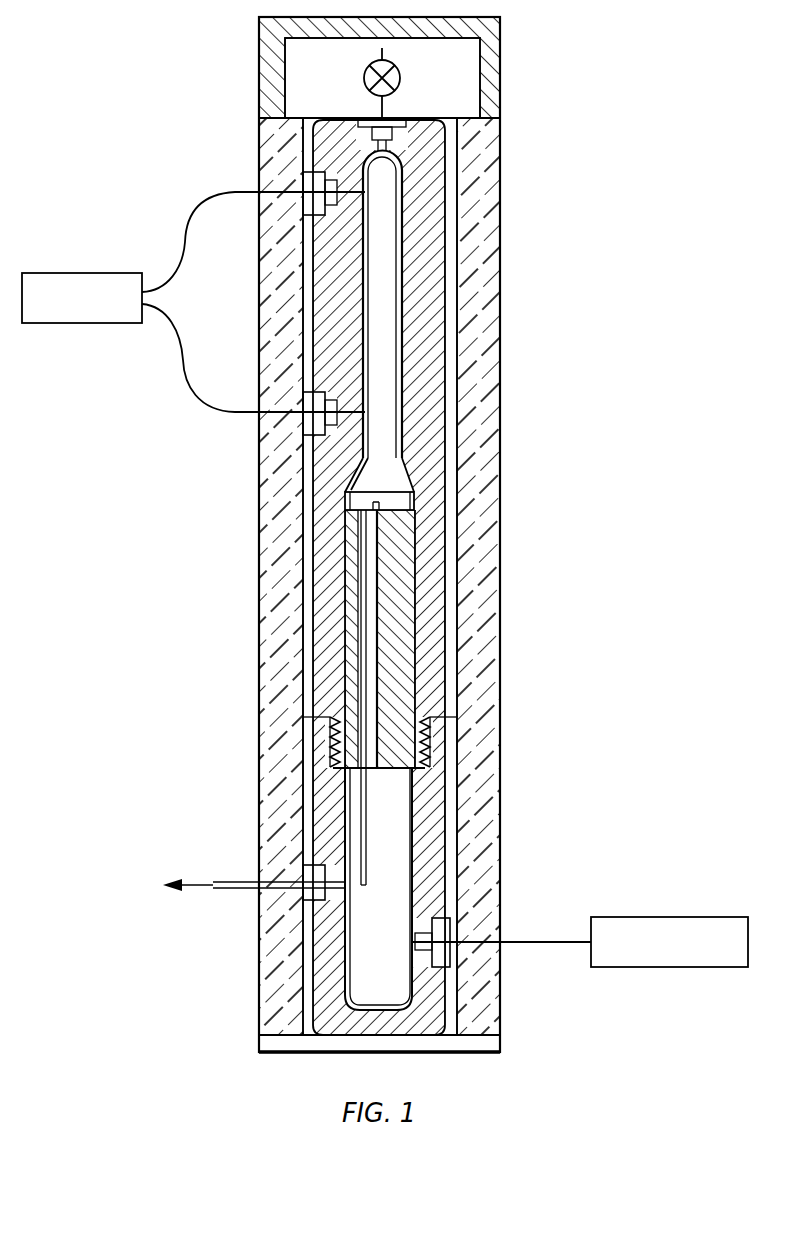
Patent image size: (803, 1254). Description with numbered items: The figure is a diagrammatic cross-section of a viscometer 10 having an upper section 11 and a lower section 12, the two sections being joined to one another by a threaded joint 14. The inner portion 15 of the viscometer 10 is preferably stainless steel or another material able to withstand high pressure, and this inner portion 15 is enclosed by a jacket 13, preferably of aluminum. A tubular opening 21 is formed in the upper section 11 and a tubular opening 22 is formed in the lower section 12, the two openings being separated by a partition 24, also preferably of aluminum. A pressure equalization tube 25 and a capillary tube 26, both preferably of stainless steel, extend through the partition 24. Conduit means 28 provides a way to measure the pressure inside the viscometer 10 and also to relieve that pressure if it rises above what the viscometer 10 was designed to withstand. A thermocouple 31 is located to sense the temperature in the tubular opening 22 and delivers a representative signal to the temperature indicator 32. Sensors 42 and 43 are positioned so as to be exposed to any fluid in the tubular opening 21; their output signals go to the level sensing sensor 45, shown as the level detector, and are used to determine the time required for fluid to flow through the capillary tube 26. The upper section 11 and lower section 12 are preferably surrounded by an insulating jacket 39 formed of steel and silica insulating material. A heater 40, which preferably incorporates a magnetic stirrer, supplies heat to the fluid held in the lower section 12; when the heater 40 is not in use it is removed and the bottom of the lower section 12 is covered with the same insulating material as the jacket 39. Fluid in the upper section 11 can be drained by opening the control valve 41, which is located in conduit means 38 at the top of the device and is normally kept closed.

The viscometer 10 is at (620, 501).
The upper section 11 is at (568, 228).
The lower section 12 is at (582, 813).
The jacket 13 is at (465, 280).
The threaded joint 14 is at (452, 716).
The inner portion 15 is at (447, 333).
The tubular opening 21 is at (371, 356).
The tubular opening 22 is at (370, 976).
The partition 24 is at (410, 579).
The pressure equalization tube 25 is at (364, 886).
The capillary tube 26 is at (369, 492).
The conduit means 28 is at (246, 890).
The thermocouple 31 is at (506, 942).
The temperature indicator 32 is at (628, 917).
The conduit means 38 is at (386, 129).
The insulating jacket 39 is at (258, 626).
The heater 40 is at (498, 1042).
The control valve 41 is at (401, 70).
The sensor 42 is at (238, 191).
The sensor 43 is at (240, 414).
The level sensing sensor 45 is at (80, 272).